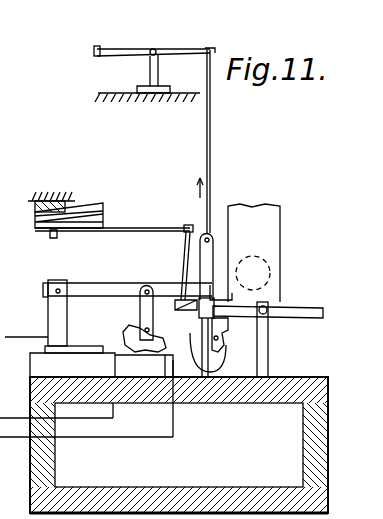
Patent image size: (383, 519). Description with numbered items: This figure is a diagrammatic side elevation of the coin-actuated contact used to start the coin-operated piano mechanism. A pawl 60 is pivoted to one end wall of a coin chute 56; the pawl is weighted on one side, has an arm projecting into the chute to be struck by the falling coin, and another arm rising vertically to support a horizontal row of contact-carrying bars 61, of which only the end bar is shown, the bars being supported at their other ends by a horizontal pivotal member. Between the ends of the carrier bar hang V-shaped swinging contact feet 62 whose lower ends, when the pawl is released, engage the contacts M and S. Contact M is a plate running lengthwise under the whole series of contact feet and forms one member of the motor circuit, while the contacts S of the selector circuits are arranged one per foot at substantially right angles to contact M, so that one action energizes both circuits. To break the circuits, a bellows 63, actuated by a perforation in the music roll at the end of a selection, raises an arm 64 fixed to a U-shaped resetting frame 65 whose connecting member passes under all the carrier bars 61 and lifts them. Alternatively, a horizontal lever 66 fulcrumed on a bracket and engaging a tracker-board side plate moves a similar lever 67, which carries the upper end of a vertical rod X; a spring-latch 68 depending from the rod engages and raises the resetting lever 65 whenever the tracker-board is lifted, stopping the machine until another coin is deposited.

The coin-chute 56 is at (281, 273).
The pawl 60 is at (219, 319).
The contact-carrying bar 61 is at (101, 277).
The contact foot 62 is at (128, 333).
The bellows 63 is at (84, 203).
The arm 64 is at (184, 250).
The resetting frame 65 is at (251, 314).
The lever 66 is at (99, 46).
The lever 67 is at (186, 49).
The spring-latch 68 is at (188, 337).
The rod X is at (212, 166).
The selector circuit contact S is at (127, 410).
The motor circuit contact M is at (180, 418).